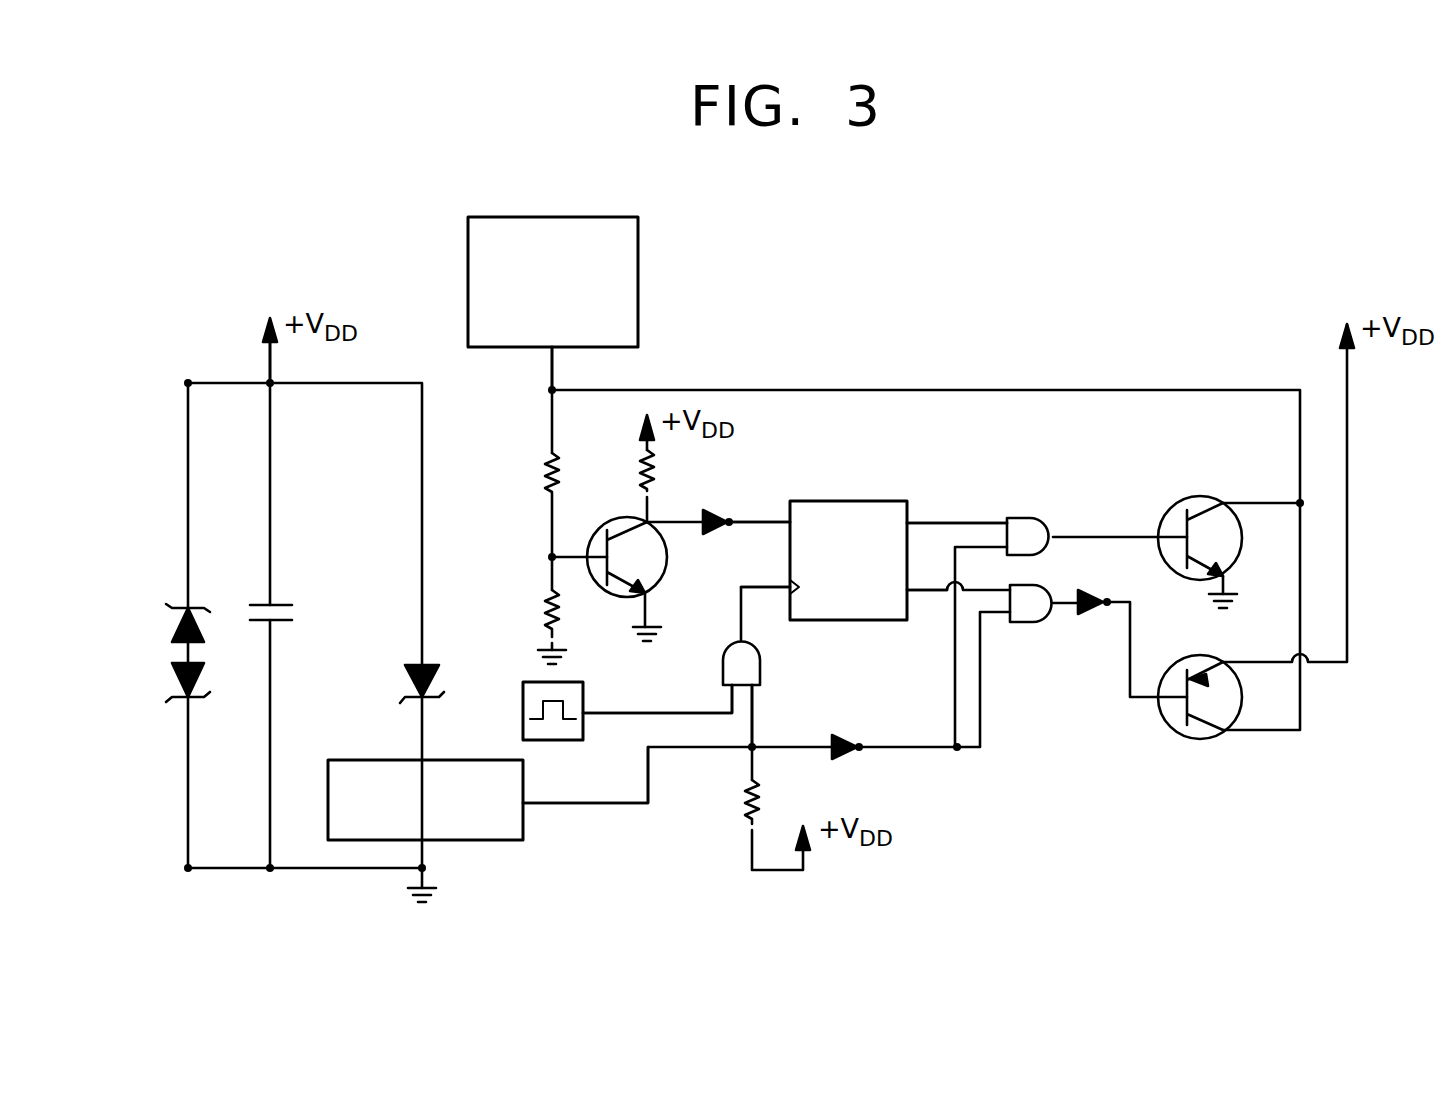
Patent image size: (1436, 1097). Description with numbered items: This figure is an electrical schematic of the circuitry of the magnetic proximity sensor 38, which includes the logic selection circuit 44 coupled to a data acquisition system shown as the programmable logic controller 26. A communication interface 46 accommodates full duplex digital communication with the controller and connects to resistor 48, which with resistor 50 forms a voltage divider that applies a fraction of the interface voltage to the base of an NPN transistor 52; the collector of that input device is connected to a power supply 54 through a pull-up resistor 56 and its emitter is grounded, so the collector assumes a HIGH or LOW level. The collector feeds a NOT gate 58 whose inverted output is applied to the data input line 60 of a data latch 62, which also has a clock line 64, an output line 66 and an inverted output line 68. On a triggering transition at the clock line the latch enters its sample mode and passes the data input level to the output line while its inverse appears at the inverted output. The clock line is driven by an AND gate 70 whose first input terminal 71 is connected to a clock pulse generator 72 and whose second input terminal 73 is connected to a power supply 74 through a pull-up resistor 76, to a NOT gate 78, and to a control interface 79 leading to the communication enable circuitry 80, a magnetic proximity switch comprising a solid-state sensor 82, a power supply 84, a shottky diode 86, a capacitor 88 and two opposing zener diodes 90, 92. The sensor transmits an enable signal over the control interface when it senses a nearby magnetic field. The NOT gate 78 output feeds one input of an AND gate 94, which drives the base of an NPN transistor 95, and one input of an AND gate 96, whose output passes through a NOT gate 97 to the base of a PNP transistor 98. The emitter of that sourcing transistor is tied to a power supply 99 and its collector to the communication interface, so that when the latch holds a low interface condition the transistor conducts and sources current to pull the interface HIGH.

The programmable logic controller 26 is at (468, 240).
The magnetic proximity sensor 38 is at (889, 268).
The logic selection circuit 44 is at (967, 368).
The communication interface 46 is at (555, 363).
The resistor 48 is at (547, 472).
The resistor 50 is at (547, 622).
The NPN transistor 52 is at (600, 588).
The power supply 54 is at (742, 415).
The pull-up resistor 56 is at (642, 472).
The NOT gate 58 is at (715, 535).
The data input line 60 is at (790, 505).
The data latch 62 is at (849, 496).
The clock line 64 is at (788, 598).
The output line 66 is at (910, 520).
The inverted output line 68 is at (907, 595).
The AND gate 70 is at (723, 663).
The first input terminal 71 is at (732, 702).
The clock pulse generator 72 is at (567, 742).
The second input terminal 73 is at (756, 702).
The power supply 74 is at (886, 822).
The pull-up resistor 76 is at (747, 806).
The NOT gate 78 is at (848, 740).
The control interface 79 is at (598, 806).
The communication enable circuitry 80 is at (371, 533).
The solid-state sensor 82 is at (483, 843).
The power supply 84 is at (308, 306).
The shottky diode 86 is at (440, 680).
The capacitor 88 is at (292, 621).
The zener diode 90 is at (172, 625).
The zener diode 92 is at (172, 680).
The AND gate 94 is at (1022, 516).
The NPN transistor 95 is at (1195, 498).
The AND gate 96 is at (1030, 623).
The NOT gate 97 is at (1092, 615).
The PNP transistor 98 is at (1204, 738).
The power supply 99 is at (1410, 312).